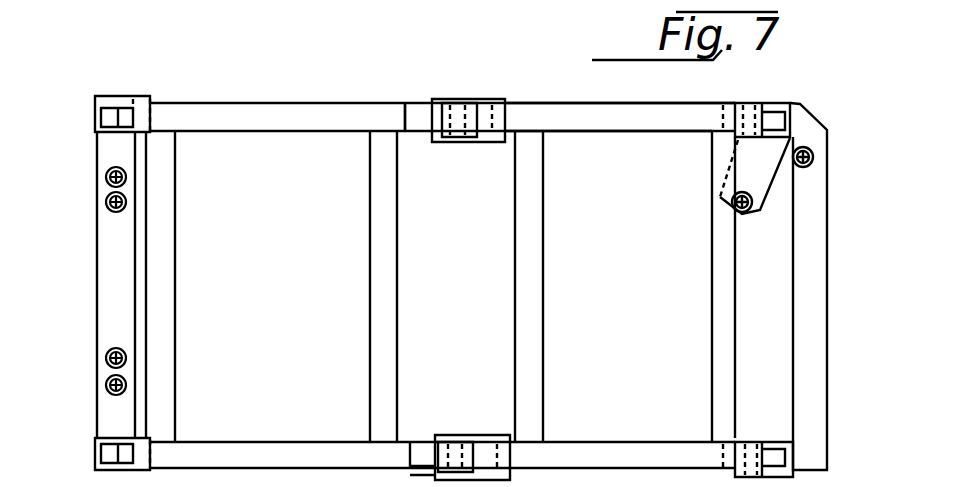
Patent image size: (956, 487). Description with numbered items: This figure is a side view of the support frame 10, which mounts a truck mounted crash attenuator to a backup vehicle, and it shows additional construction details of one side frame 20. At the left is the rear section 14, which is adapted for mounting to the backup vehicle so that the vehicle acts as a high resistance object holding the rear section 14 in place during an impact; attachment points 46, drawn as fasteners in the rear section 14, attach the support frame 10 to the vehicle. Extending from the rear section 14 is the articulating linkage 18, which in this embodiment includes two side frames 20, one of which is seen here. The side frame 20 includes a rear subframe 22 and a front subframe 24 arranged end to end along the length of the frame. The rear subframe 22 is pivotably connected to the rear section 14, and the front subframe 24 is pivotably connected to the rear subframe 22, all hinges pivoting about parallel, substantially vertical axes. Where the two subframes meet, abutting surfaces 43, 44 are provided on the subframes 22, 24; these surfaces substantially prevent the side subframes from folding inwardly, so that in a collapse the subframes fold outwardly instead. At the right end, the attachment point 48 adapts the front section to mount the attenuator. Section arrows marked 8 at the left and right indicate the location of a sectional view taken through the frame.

The support frame 10 is at (98, 70).
The rear section 14 is at (110, 265).
The articulating linkage 18 is at (336, 152).
The side frame 20 is at (510, 92).
The rear subframe 22 is at (209, 115).
The front subframe 24 is at (574, 118).
The abutting surface 43 is at (418, 127).
The abutting surface 44 is at (462, 143).
The attachment points 46 is at (103, 199).
The attachment point 48 is at (805, 149).
The section line 8- 8 is at (60, 450).